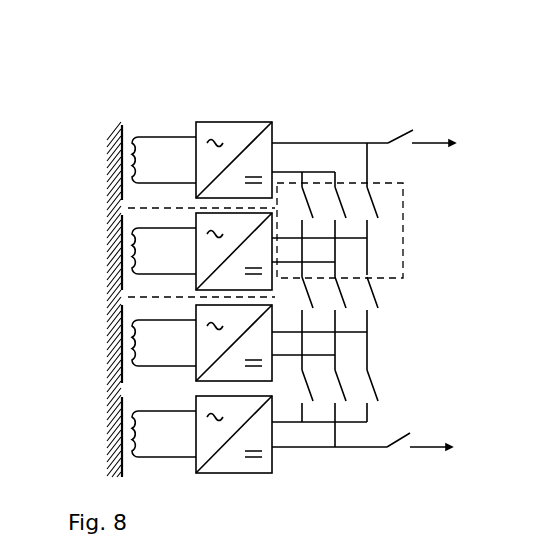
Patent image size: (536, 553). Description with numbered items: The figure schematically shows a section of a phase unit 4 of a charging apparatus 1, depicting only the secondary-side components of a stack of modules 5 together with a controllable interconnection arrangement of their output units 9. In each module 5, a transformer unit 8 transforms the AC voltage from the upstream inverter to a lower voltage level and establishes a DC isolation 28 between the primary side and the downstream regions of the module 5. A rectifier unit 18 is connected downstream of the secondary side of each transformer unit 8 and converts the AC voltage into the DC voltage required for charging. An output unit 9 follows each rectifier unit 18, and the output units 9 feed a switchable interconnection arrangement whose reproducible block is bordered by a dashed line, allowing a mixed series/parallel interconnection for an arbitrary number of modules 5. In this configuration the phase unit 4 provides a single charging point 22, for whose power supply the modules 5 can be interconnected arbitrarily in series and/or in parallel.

The charging apparatus 1 is at (101, 36).
The phase unit 4 is at (101, 61).
The module 5 is at (99, 153).
The DC isolation 28 is at (127, 129).
The transformer unit 8 is at (145, 126).
The rectifier unit 18 is at (226, 121).
The output unit 9 is at (323, 118).
The charging point 22 is at (452, 446).